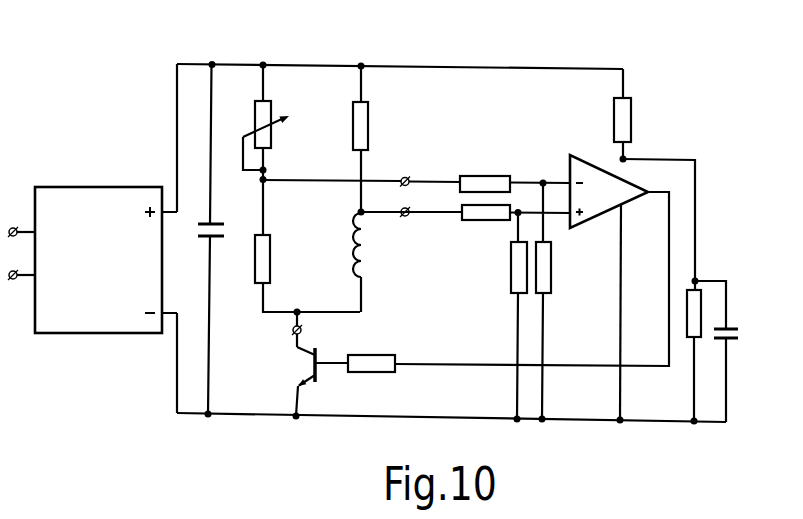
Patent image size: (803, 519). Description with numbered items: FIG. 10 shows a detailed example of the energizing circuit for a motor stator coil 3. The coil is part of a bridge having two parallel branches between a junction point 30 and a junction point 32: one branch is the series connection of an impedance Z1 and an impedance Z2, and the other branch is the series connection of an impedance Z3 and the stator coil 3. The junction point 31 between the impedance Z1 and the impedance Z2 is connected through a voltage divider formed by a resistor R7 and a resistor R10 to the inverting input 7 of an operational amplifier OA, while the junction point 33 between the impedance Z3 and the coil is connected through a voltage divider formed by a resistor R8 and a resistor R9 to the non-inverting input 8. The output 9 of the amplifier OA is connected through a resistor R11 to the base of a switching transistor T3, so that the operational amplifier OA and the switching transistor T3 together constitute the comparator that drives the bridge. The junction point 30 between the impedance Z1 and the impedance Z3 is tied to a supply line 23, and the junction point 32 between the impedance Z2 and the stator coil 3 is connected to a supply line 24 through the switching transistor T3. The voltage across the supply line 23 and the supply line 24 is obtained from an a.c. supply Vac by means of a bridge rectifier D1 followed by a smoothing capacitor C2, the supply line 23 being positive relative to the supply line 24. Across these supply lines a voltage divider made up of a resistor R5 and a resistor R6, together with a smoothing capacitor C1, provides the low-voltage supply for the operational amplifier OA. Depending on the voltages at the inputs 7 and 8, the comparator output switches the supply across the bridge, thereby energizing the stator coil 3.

The stator coil 3 is at (371, 250).
The inverting input 7 is at (361, 168).
The non-inverting input 8 is at (412, 223).
The output 9 is at (305, 333).
The supply line 23 is at (235, 62).
The supply line 24 is at (255, 418).
The junction point 30 is at (362, 62).
The junction point 31 is at (261, 182).
The junction point 32 is at (294, 316).
The junction point 33 is at (357, 212).
The bridge rectifier D1 is at (85, 334).
The a.c. supply Vac is at (15, 253).
The smoothing capacitor C1 is at (721, 326).
The smoothing capacitor C2 is at (207, 234).
The impedance Z1 is at (255, 112).
The impedance Z2 is at (255, 262).
The impedance Z3 is at (369, 130).
The resistor R5 is at (632, 126).
The resistor R6 is at (702, 332).
The resistor R7 is at (485, 175).
The resistor R8 is at (474, 221).
The resistor R9 is at (510, 276).
The resistor R10 is at (552, 278).
The resistor R11 is at (383, 355).
The operational amplifier OA is at (597, 220).
The switching transistor T3 is at (311, 367).